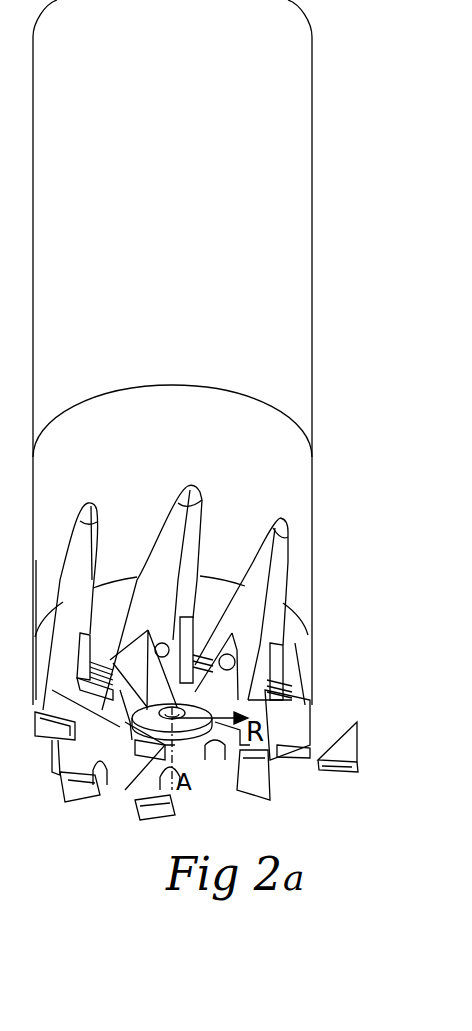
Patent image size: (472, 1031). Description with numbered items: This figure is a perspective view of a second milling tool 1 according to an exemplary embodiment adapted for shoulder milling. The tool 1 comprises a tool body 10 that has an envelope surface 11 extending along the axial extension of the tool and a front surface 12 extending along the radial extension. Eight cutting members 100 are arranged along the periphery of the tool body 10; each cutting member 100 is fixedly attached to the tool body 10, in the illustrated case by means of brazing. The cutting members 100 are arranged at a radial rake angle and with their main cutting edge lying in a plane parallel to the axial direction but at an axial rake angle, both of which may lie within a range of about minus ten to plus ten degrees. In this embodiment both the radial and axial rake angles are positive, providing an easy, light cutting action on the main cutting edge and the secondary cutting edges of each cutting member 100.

The milling tool 1 is at (331, 58).
The tool body 10 is at (312, 213).
The envelope surface 11 is at (290, 486).
The front surface 12 is at (140, 747).
The cutting member 100 is at (344, 802).